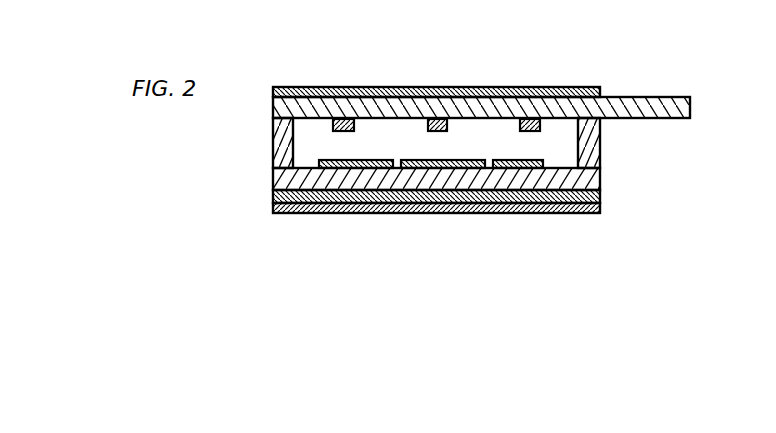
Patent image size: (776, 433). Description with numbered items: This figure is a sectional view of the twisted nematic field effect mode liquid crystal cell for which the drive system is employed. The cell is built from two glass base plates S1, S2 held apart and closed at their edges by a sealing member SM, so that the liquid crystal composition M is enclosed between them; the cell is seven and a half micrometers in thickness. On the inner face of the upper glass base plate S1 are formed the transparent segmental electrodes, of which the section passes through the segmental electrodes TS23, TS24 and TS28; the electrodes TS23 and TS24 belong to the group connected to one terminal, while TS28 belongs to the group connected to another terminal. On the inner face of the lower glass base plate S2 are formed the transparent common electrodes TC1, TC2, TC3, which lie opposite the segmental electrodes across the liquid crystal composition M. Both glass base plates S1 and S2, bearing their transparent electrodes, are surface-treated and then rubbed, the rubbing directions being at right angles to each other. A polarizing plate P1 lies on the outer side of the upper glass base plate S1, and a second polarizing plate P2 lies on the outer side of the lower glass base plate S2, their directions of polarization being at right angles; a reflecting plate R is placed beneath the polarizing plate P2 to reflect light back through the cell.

The polarizing plate P1 is at (598, 87).
The glass base plate S1 is at (690, 106).
The sealing member SM is at (282, 146).
The glass base plate S2 is at (595, 180).
The polarizing plate P2 is at (600, 196).
The reflecting plate R is at (587, 213).
The transparent segmental electrode TS23 is at (344, 124).
The transparent segmental electrode TS24 is at (442, 124).
The transparent segmental electrode TS28 is at (533, 124).
The transparent common electrode TC1 is at (365, 213).
The transparent common electrode TC2 is at (452, 213).
The transparent common electrode TC3 is at (523, 213).
The liquid crystal composition M is at (316, 143).